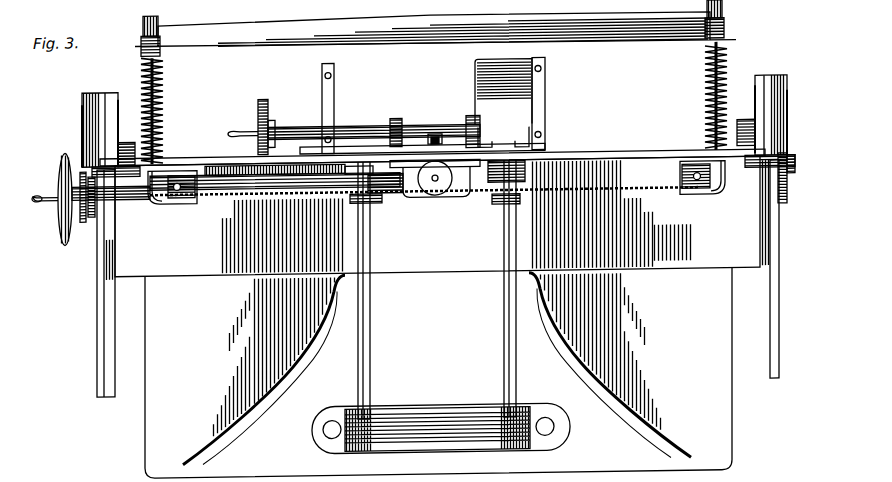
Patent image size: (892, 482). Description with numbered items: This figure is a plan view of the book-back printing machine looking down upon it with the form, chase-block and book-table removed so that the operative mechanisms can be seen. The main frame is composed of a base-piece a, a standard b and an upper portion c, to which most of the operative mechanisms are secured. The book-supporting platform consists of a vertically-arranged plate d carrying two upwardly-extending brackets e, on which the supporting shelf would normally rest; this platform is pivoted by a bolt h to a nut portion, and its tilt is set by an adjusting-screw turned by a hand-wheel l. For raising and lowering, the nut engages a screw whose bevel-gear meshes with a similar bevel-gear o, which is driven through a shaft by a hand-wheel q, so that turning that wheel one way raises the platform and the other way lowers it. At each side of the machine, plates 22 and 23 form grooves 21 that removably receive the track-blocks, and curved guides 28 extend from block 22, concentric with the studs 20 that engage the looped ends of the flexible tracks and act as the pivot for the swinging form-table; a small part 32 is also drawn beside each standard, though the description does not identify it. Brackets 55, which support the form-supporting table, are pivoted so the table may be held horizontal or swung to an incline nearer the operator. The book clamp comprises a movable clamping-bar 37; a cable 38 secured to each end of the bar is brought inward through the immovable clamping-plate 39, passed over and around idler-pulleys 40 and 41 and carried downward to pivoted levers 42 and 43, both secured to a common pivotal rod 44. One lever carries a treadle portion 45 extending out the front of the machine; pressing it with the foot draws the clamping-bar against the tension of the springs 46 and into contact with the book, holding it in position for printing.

The clamping-bar 37 is at (435, 30).
The springs 46 is at (163, 70).
The grooves 21 is at (92, 98).
The plate or block 22 is at (86, 115).
The plate or block 23 is at (118, 112).
The studs 20 is at (92, 160).
The bracket 32 is at (161, 136).
The cable or cord 38 is at (161, 104).
The immovable clamping-plate 39 is at (591, 152).
The idler-pulley 40 is at (166, 199).
The idler-pulley 41 is at (376, 202).
The pivoted lever 42 is at (370, 305).
The pivoted lever 43 is at (504, 304).
The common pivotal rod 44 is at (426, 417).
The treadle portion 45 is at (503, 103).
The brackets 55 is at (98, 300).
The curved guides 28 is at (86, 200).
The base-piece a is at (145, 410).
The standard b is at (437, 312).
The upper portion c is at (442, 216).
The vertically-arranged plate d is at (365, 146).
The upwardly-extending brackets e is at (334, 94).
The bolt h is at (435, 132).
The hand-wheel l is at (258, 115).
The bevel-gear o is at (419, 197).
The hand-wheel q is at (58, 204).